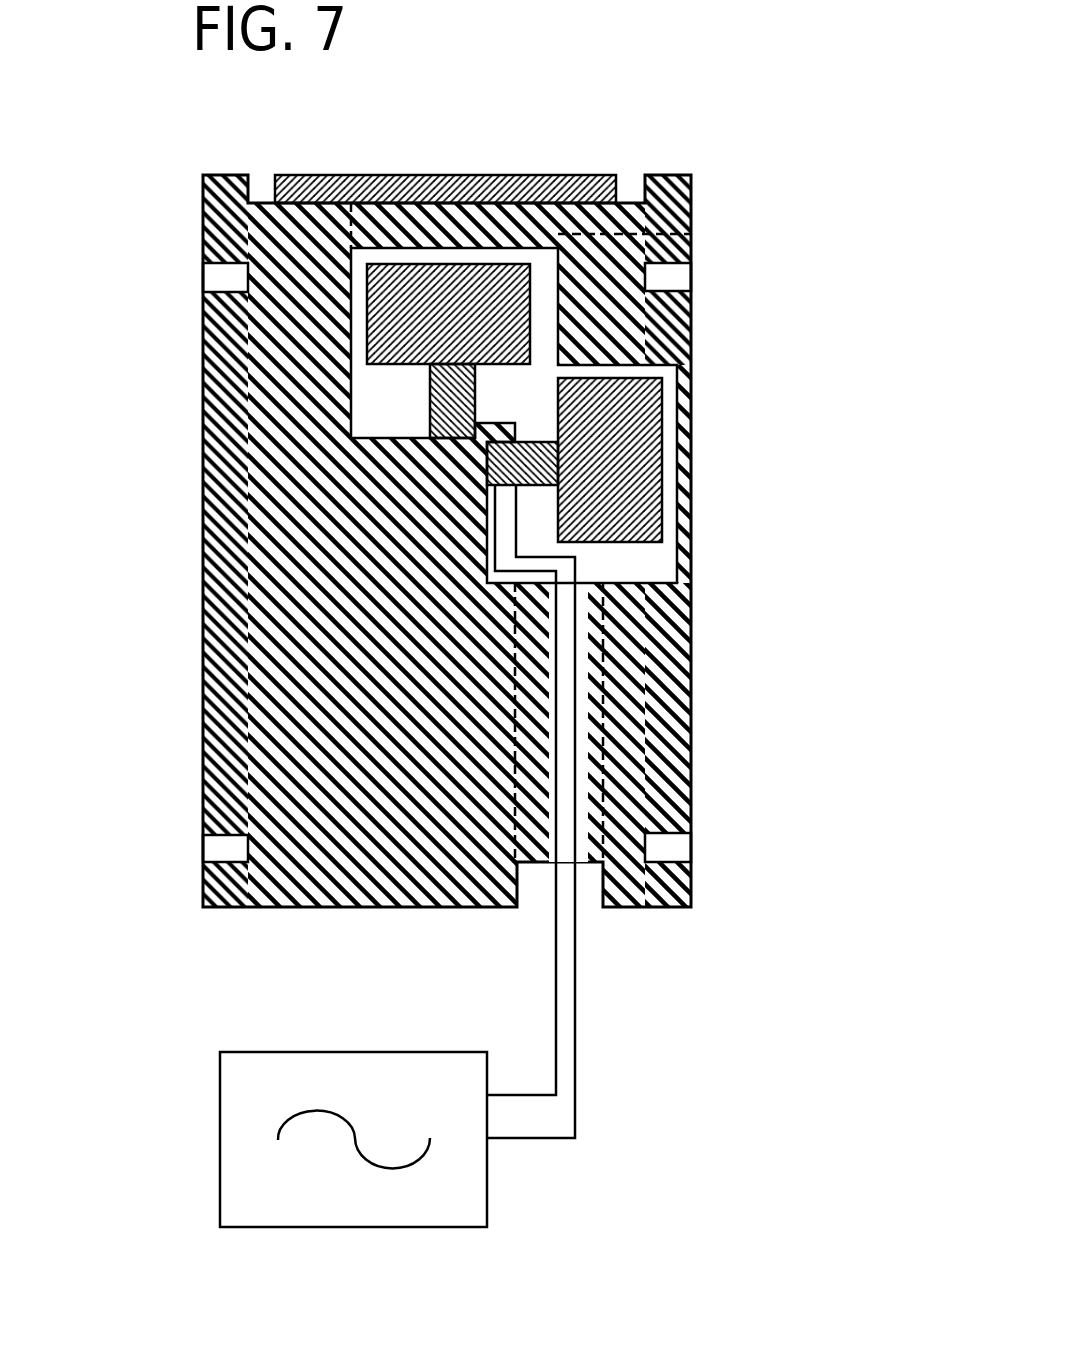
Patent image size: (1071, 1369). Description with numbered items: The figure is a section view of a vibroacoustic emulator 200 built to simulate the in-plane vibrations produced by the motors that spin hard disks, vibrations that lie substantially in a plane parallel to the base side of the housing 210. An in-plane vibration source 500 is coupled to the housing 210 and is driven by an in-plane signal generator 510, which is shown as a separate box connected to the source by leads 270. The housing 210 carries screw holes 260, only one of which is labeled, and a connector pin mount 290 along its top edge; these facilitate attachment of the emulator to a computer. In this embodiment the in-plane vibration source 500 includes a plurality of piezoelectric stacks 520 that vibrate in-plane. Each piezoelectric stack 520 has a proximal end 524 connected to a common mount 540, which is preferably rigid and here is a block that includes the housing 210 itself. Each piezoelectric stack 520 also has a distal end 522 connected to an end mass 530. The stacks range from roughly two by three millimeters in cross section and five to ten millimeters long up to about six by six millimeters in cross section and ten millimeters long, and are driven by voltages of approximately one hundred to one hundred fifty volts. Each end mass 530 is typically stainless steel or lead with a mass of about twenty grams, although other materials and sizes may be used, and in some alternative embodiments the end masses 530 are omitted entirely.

The vibroacoustic emulator 200 is at (658, 150).
The housing 210 is at (693, 718).
The screw holes 260 is at (203, 852).
The lead wires 270 is at (557, 913).
The connector pin mount 290 is at (303, 173).
The in-plane vibration source 500 is at (700, 333).
The in-plane signal generator 510 is at (487, 1152).
The piezoelectric stack 520 is at (428, 383).
The distal end 522 is at (430, 368).
The proximal end 524 is at (425, 428).
The end mass 530 is at (363, 277).
The common mount 540 is at (458, 458).